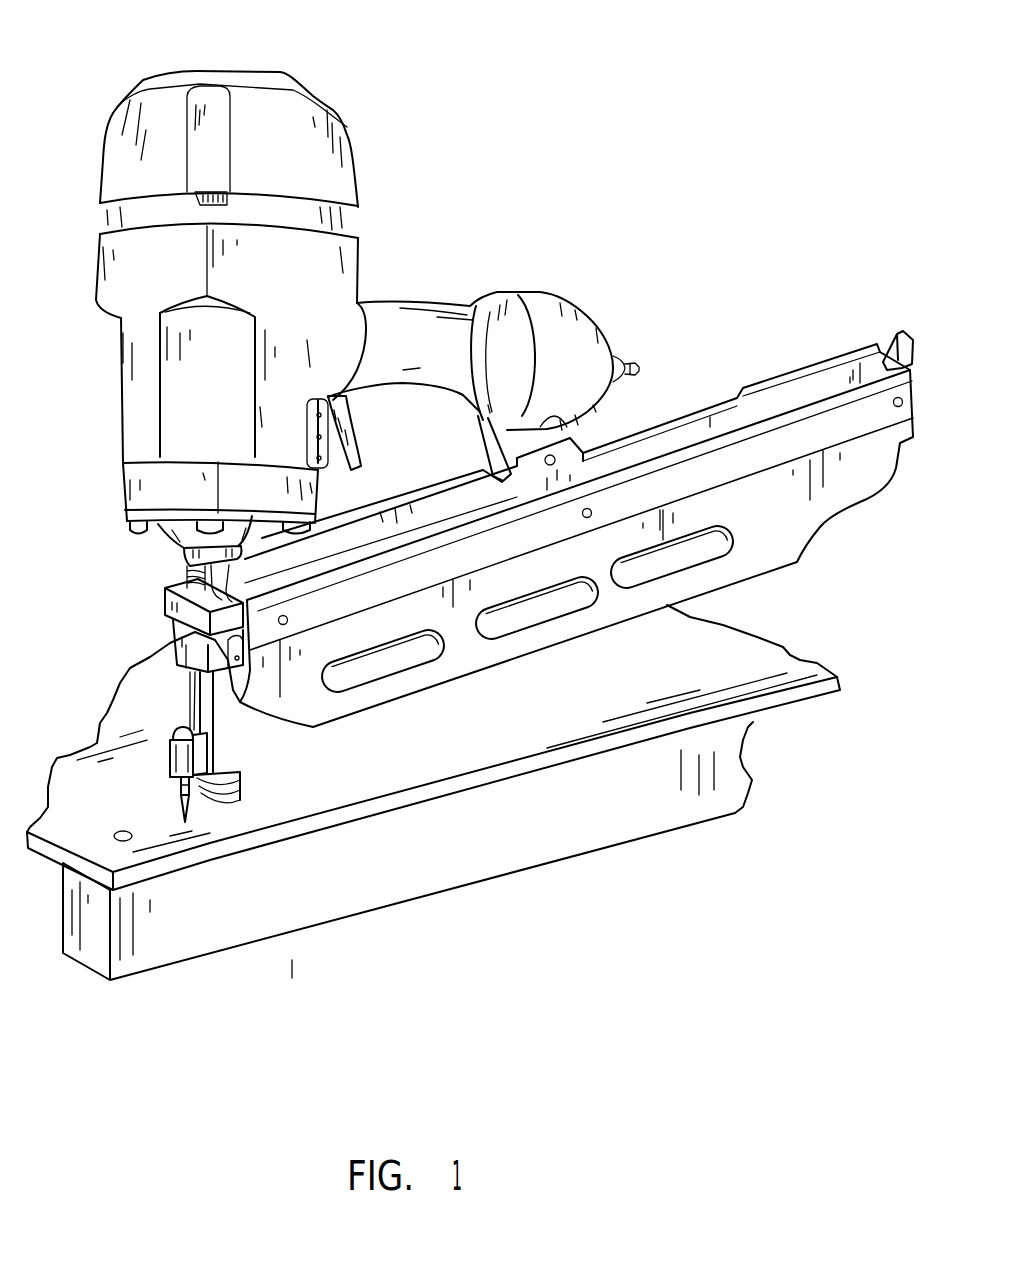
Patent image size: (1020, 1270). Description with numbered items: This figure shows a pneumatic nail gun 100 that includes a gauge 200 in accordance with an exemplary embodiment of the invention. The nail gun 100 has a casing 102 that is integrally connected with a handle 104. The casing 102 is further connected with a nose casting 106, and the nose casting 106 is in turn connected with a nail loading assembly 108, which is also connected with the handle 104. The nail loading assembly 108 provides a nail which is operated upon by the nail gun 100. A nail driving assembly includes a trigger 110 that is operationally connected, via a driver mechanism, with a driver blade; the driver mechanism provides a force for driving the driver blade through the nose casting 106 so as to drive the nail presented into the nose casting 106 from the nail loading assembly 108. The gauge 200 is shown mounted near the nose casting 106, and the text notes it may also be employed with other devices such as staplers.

The pneumatic nail gun 100 is at (471, 172).
The casing 102 is at (118, 272).
The handle 104 is at (430, 340).
The nose casting 106 is at (182, 536).
The nail loading assembly 108 is at (787, 524).
The trigger 110 is at (366, 431).
The gauge 200 is at (170, 757).